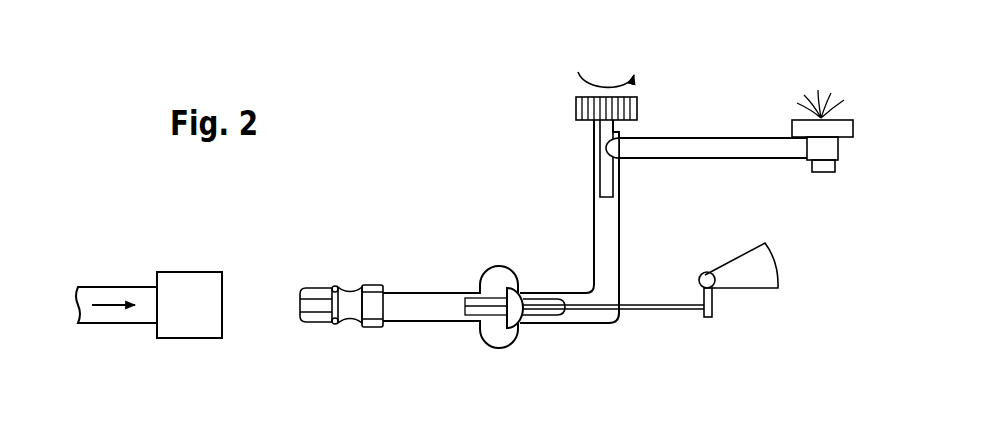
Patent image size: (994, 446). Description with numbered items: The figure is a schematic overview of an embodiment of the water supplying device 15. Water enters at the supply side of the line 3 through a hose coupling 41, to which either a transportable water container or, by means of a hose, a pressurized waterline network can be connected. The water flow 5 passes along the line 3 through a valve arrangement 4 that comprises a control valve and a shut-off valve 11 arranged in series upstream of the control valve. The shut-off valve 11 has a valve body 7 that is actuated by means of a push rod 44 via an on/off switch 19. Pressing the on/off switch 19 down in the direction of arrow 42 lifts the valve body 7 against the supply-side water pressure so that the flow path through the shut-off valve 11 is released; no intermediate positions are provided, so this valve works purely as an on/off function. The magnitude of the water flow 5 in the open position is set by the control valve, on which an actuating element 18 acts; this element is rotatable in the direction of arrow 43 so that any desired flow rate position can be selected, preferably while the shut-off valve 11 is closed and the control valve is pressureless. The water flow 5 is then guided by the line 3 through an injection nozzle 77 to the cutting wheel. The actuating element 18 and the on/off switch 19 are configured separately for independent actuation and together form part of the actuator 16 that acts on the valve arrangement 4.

The line 3 is at (421, 310).
The valve arrangement 4 is at (587, 152).
The water flow 5 is at (106, 305).
The valve body 7 is at (505, 326).
The shut-off valve 11 is at (537, 332).
The water supplying device 15 is at (472, 212).
The actuator 16 is at (668, 100).
The actuating element 18 is at (589, 106).
The on/off switch 19 is at (745, 284).
The hose coupling 41 is at (198, 328).
The arrow 42 is at (708, 224).
The arrow 43 is at (598, 88).
The push rod 44 is at (661, 314).
The injection nozzle 77 is at (845, 131).